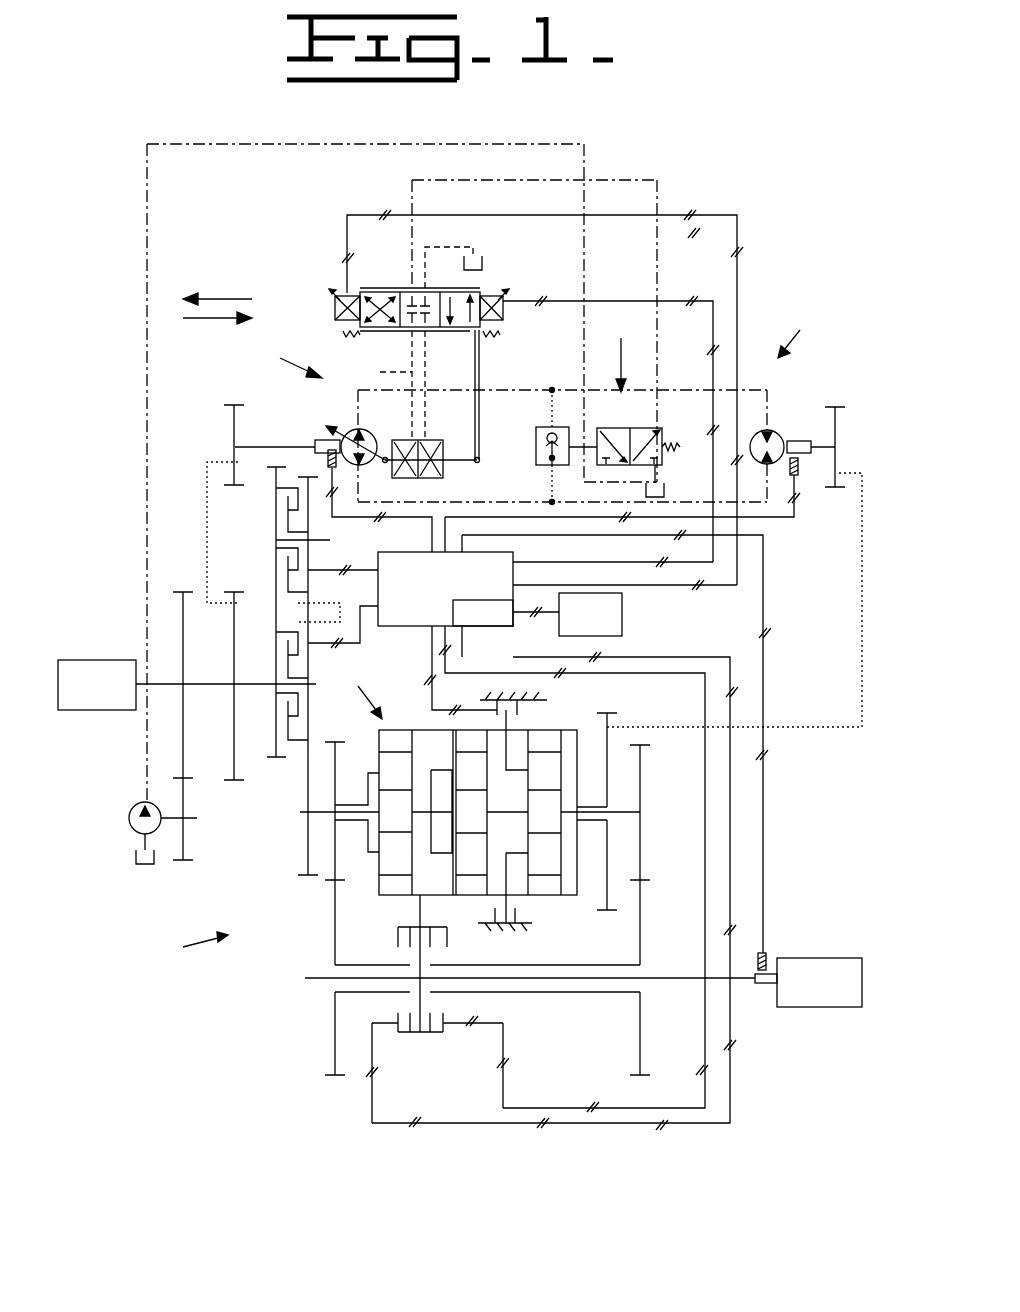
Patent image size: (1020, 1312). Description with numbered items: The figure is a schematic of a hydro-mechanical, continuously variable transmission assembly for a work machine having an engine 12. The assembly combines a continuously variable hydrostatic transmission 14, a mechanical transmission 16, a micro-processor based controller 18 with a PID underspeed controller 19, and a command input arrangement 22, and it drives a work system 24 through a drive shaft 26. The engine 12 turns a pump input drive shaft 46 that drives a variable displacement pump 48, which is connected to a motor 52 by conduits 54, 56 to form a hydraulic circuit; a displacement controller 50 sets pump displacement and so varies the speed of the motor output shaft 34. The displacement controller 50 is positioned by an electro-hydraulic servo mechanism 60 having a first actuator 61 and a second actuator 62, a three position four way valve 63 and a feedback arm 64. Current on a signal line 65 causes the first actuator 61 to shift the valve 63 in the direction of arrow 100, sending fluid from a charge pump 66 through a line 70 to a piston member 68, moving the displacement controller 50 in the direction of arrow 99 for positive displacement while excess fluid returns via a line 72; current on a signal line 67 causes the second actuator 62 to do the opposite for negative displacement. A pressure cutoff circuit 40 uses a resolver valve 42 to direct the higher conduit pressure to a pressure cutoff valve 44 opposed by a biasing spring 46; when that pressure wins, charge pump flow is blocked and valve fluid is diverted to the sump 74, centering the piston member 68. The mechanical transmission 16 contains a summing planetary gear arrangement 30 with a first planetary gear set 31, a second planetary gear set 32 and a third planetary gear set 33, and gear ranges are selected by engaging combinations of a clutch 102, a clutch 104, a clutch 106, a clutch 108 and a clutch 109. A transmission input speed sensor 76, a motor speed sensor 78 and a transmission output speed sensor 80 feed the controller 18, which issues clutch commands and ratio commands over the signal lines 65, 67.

The engine 12 is at (82, 659).
The continuously variable hydrostatic transmission 14 is at (802, 330).
The mechanical transmission 16 is at (191, 948).
The controller 18 is at (404, 626).
The PID underspeed controller 19 is at (513, 620).
The command input arrangement 22 is at (622, 620).
The work system 24 is at (832, 956).
The drive shaft 26 is at (307, 980).
The summing planetary gear arrangement 30 is at (458, 781).
The first planetary gear set 31 is at (385, 905).
The second planetary gear set 32 is at (462, 896).
The third planetary gear set 33 is at (567, 897).
The motor output shaft 34 is at (790, 436).
The pressure cutoff circuit 40 is at (626, 353).
The resolver valve 42 is at (536, 440).
The pressure cutoff valve 44 is at (614, 427).
The pump input drive shaft 46 is at (323, 432).
The variable displacement pump 48 is at (370, 434).
The displacement controller 50 is at (384, 464).
The motor 52 is at (770, 412).
The conduit 54 is at (684, 390).
The conduit 56 is at (496, 502).
The electro-hydraulic servo mechanism 60 is at (286, 362).
The first solenoid or first actuator 61 is at (329, 302).
The second solenoid or second actuator 62 is at (508, 316).
The three position four way valve 63 is at (354, 328).
The feedback arm 64 is at (479, 375).
The signal line 65 is at (606, 217).
The charge pump 66 is at (130, 832).
The signal line 67 is at (697, 300).
The piston member 68 is at (422, 438).
The line 70 is at (429, 368).
The line 72 is at (383, 373).
The sump 74 is at (483, 265).
The transmission input speed sensor 76 is at (322, 459).
The motor speed sensor 78 is at (798, 487).
The transmission output speed sensor 80 is at (767, 952).
The arrow 99 is at (233, 298).
The arrow 100 is at (210, 323).
The clutch 102 is at (520, 712).
The clutch 104 is at (395, 938).
The clutch 106 is at (444, 938).
The clutch 108 is at (276, 502).
The clutch 109 is at (276, 730).